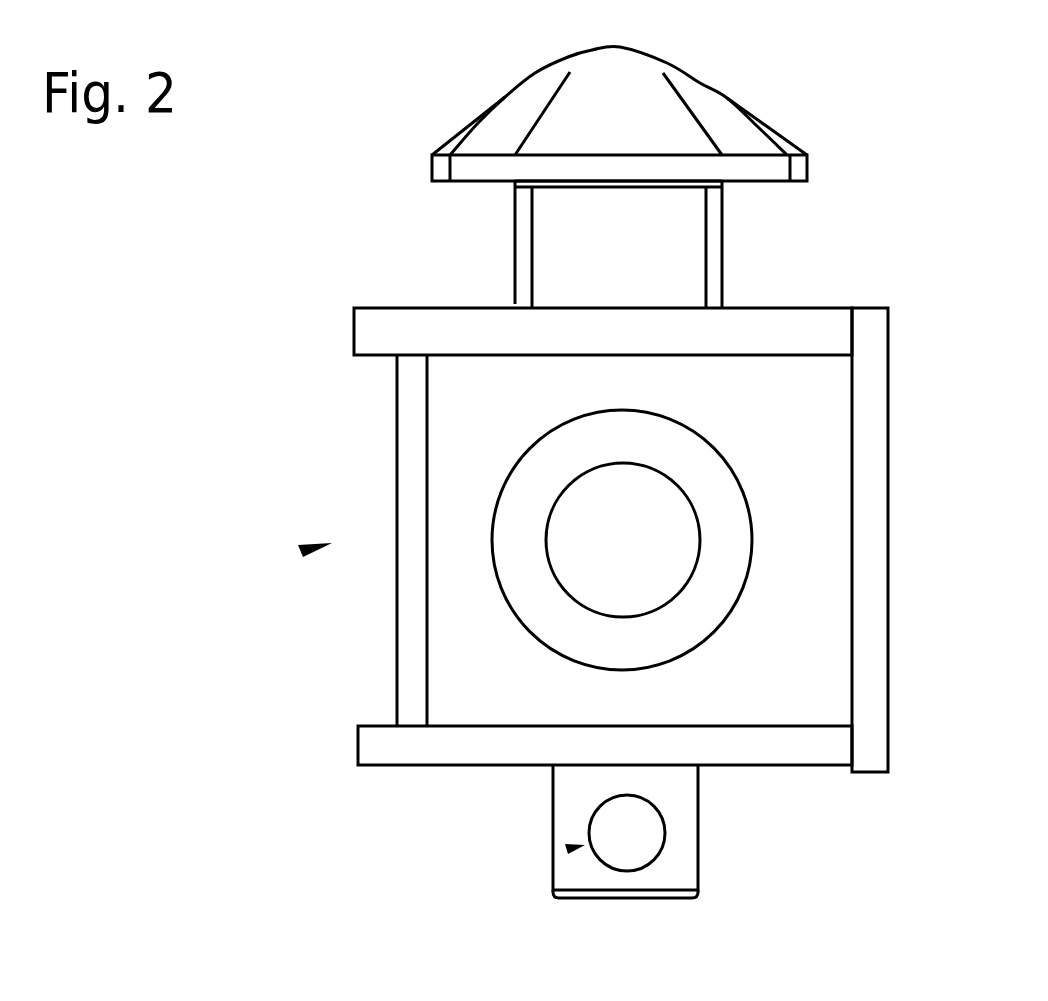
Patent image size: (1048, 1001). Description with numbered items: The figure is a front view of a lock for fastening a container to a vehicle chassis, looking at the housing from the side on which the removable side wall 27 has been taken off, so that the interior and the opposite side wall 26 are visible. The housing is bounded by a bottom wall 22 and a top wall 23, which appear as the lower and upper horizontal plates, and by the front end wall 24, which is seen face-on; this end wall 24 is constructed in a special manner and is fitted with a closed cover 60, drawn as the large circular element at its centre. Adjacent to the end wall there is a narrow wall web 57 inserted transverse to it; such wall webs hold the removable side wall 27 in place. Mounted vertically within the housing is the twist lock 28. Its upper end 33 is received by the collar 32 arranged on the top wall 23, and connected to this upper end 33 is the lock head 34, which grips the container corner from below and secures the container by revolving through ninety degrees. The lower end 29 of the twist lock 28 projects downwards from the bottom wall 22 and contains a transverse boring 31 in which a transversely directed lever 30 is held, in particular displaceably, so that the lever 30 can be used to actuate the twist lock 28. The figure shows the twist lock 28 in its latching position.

The bottom wall 22 is at (820, 747).
The top wall 23 is at (812, 325).
The front end wall 24 is at (815, 620).
The side wall 26 is at (872, 440).
The side wall 27 is at (303, 550).
The twist lock 28 is at (607, 778).
The lower end 29 is at (667, 893).
The lever 30 is at (647, 837).
The transverse boring 31 is at (567, 850).
The collar 32 is at (692, 242).
The upper end 33 is at (660, 180).
The lock head 34 is at (603, 88).
The wall web 57 is at (408, 651).
The closed cover 60 is at (737, 553).